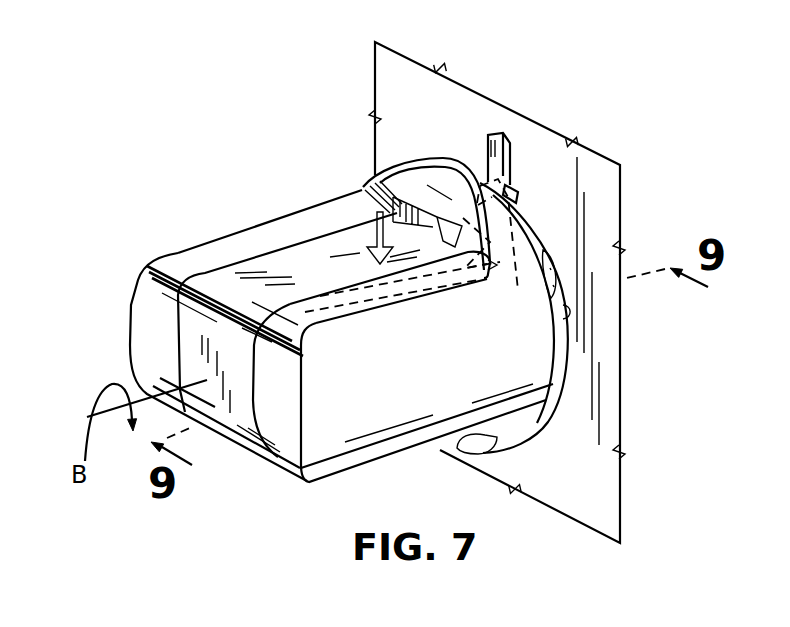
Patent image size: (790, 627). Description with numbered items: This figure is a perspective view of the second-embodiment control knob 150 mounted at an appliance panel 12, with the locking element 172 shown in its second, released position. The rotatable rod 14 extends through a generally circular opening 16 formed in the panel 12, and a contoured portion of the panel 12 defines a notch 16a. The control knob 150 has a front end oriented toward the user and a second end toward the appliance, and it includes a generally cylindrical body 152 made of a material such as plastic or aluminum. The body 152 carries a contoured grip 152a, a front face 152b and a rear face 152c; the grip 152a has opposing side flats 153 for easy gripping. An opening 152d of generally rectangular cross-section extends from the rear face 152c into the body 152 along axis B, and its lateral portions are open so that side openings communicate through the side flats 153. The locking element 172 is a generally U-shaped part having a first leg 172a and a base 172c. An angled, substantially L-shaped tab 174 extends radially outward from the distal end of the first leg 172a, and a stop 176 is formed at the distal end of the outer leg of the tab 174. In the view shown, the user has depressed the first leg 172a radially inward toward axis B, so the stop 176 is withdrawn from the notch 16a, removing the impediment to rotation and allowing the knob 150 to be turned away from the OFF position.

The panel 12 is at (606, 177).
The rotatable rod 14 is at (562, 259).
The opening 16 is at (568, 320).
The notch 16a is at (502, 143).
The control knob 150 is at (176, 186).
The body 152 is at (402, 442).
The contoured grip 152a is at (270, 230).
The front face 152b is at (278, 410).
The rear face 152c is at (558, 349).
The opening 152d is at (375, 188).
The side flats 153 is at (215, 250).
The locking element 172 is at (250, 256).
The first leg 172a is at (345, 245).
The base 172c is at (195, 350).
The tab 174 is at (422, 253).
The stop 176 is at (518, 197).